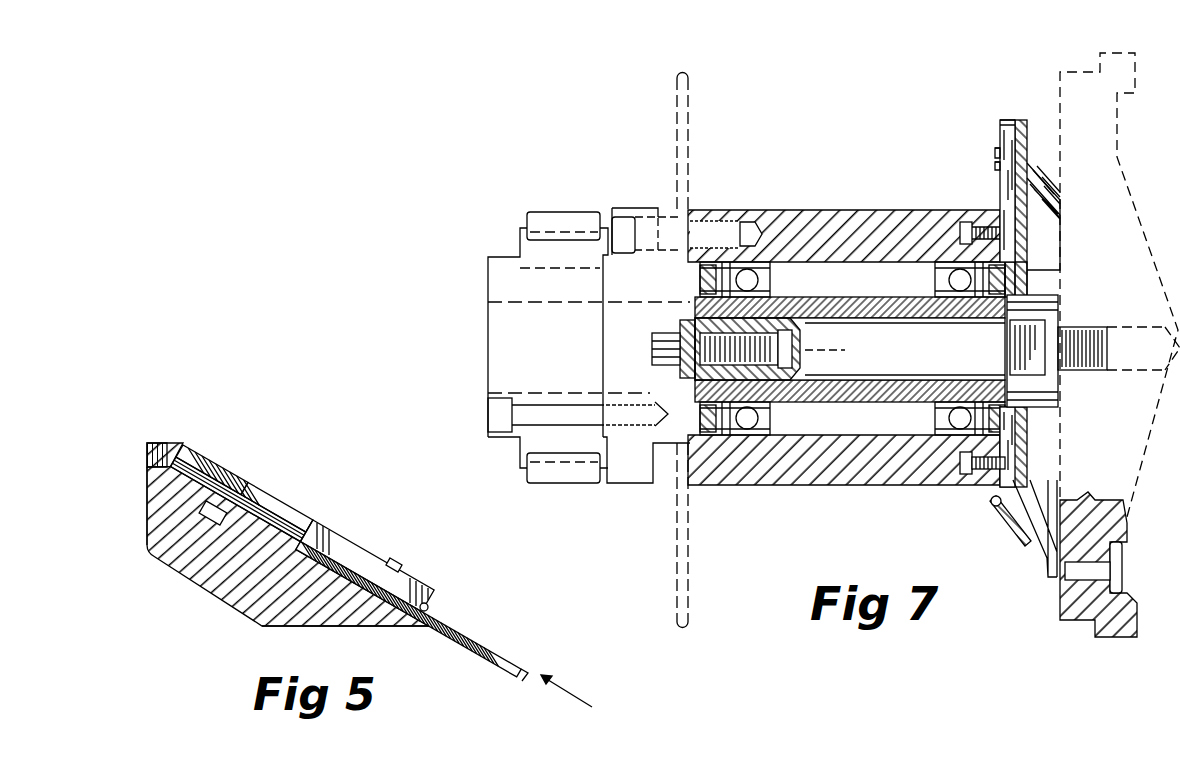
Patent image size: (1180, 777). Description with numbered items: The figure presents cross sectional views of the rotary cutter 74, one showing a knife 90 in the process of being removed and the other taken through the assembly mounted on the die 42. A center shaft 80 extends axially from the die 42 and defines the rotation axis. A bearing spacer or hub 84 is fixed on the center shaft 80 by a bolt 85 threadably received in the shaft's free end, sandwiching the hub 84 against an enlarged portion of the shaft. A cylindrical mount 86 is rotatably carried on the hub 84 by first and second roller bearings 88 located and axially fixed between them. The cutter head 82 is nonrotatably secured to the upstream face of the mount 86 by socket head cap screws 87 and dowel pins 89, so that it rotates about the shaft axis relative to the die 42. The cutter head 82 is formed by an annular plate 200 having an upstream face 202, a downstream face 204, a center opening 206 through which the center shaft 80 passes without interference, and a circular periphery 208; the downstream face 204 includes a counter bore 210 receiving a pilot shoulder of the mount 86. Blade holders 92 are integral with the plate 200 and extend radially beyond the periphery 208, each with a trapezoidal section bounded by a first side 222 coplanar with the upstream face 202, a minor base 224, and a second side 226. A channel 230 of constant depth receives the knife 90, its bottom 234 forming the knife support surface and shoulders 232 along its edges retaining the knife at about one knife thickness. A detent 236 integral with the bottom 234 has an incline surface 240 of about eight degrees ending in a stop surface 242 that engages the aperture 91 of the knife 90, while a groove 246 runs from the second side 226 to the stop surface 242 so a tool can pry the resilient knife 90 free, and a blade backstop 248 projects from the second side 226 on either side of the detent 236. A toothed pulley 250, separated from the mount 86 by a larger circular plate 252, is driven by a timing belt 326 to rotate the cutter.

In FIG. 7, the die 42 is at (1060, 615).
In FIG. 7, the rotary cutter 74 is at (836, 169).
In FIG. 7, the center shaft 80 is at (858, 346).
In FIG. 5, the cutter head 82 is at (145, 435).
In FIG. 7, the cutter head 82 is at (1034, 143).
In FIG. 7, the bearing spacer or hub 84 is at (857, 295).
In FIG. 7, the bolt 85 is at (652, 349).
In FIG. 7, the cylindrical mount 86 is at (860, 210).
In FIG. 7, the socket head cap screws 87 is at (1025, 456).
In FIG. 7, the roller bearings 88 is at (772, 276).
In FIG. 7, the dowel pins 89 is at (975, 226).
In FIG. 5, the knife 90 is at (514, 648).
In FIG. 7, the knife 90 is at (1063, 216).
In FIG. 5, the aperture 91 is at (268, 498).
In FIG. 5, the blade holder 92 is at (396, 550).
In FIG. 7, the blade holder 92 is at (1009, 118).
In FIG. 7, the annular plate 200 is at (1036, 428).
In FIG. 7, the upstream face 202 is at (1040, 419).
In FIG. 7, the downstream face 204 is at (957, 490).
In FIG. 7, the center opening 206 is at (1023, 294).
In FIG. 7, the periphery 208 is at (1046, 492).
In FIG. 7, the counter bore 210 is at (1040, 268).
In FIG. 5, the first side 222 is at (380, 628).
In FIG. 5, the minor base 224 is at (208, 600).
In FIG. 7, the minor base 224 is at (1027, 128).
In FIG. 5, the second side 226 is at (148, 548).
In FIG. 7, the second side 226 is at (1018, 117).
In FIG. 5, the channel 230 is at (176, 468).
In FIG. 7, the channel 230 is at (1000, 130).
In FIG. 5, the shoulders 232 is at (393, 565).
In FIG. 7, the shoulders 232 is at (993, 498).
In FIG. 7, the bottom 234 is at (1000, 137).
In FIG. 5, the detent 236 is at (302, 519).
In FIG. 5, the incline surface 240 is at (325, 524).
In FIG. 5, the stop surface 242 is at (208, 524).
In FIG. 7, the stop surface 242 is at (1000, 164).
In FIG. 5, the groove 246 is at (163, 478).
In FIG. 5, the blade backstop 248 is at (187, 443).
In FIG. 7, the blade backstop 248 is at (1000, 150).
In FIG. 7, the toothed pulley 250 is at (545, 212).
In FIG. 7, the circular plate 252 is at (677, 104).
In FIG. 7, the belt 326 is at (568, 484).